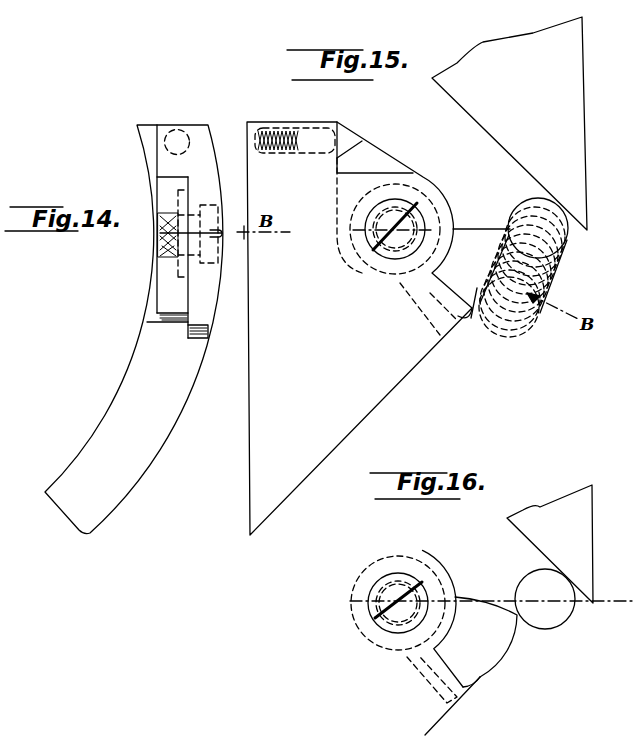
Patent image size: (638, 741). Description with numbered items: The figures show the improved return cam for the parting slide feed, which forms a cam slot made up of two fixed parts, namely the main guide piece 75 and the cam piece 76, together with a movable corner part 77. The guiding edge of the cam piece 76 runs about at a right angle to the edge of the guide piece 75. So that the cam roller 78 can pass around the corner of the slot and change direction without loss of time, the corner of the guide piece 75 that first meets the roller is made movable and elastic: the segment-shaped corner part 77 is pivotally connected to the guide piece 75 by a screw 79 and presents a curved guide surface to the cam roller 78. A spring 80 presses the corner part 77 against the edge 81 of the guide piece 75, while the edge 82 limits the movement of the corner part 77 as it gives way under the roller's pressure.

In FIG. 14, the main guide piece 75 is at (167, 423).
In FIG. 15, the main guide piece 75 is at (378, 328).
In FIG. 16, the main guide piece 75 is at (415, 642).
In FIG. 15, the cam piece 76 is at (509, 123).
In FIG. 16, the cam piece 76 is at (585, 527).
In FIG. 14, the movable corner part 77 is at (165, 290).
In FIG. 15, the movable corner part 77 is at (479, 314).
In FIG. 16, the movable corner part 77 is at (493, 640).
In FIG. 15, the cam roller 78 is at (520, 205).
In FIG. 16, the cam roller 78 is at (563, 617).
In FIG. 14, the screw 79 is at (218, 258).
In FIG. 15, the screw 79 is at (417, 203).
In FIG. 16, the screw 79 is at (375, 592).
In FIG. 14, the spring 80 is at (189, 139).
In FIG. 15, the spring 80 is at (268, 128).
In FIG. 15, the edge 81 is at (461, 320).
In FIG. 16, the edge 81 is at (473, 677).
In FIG. 15, the edge 82 is at (362, 141).